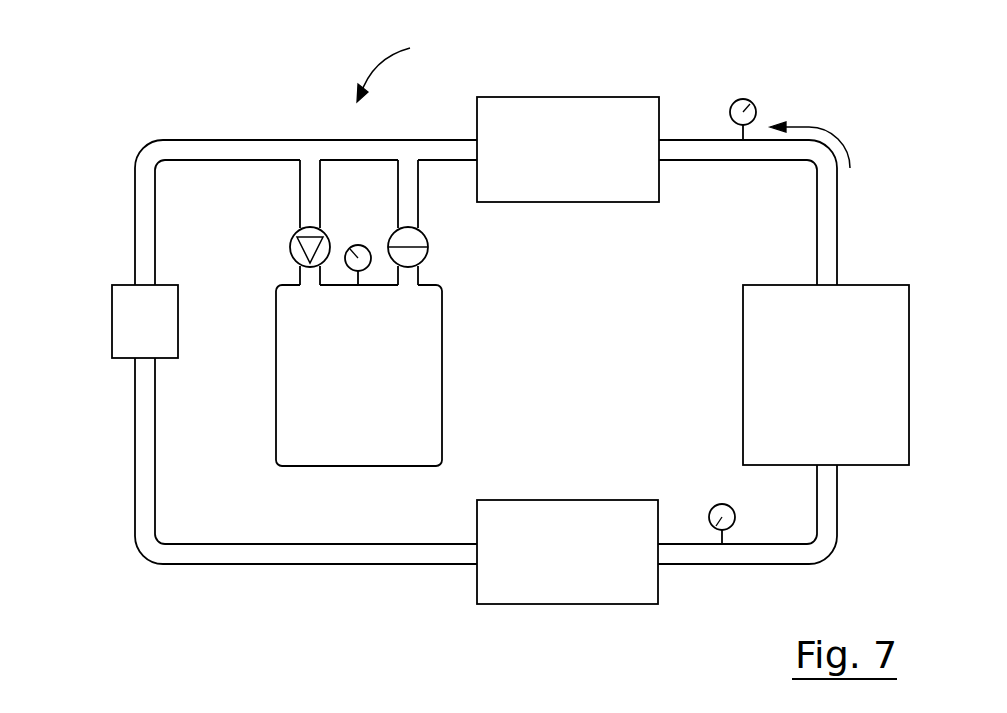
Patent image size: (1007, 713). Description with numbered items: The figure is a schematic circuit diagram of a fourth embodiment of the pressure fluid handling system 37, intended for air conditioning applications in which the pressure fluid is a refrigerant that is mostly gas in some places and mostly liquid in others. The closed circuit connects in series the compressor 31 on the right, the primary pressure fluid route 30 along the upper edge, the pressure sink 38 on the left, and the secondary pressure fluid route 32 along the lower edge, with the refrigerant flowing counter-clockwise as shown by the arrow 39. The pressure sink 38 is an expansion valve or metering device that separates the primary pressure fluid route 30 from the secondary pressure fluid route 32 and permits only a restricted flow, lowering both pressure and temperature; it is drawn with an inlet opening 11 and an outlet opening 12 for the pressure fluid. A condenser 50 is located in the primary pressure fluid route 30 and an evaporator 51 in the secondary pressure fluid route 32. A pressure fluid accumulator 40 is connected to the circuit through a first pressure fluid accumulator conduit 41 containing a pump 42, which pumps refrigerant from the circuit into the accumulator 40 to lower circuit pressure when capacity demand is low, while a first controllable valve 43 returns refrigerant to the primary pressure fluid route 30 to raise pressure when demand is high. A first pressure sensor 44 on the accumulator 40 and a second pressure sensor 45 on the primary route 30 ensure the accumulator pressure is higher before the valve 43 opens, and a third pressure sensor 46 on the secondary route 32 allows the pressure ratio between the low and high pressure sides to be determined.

The inlet opening 11 is at (148, 294).
The outlet opening 12 is at (148, 359).
The primary pressure fluid route 30 is at (223, 150).
The compressor 31 is at (755, 378).
The secondary pressure fluid route 32 is at (303, 552).
The pressure fluid handling system 37 is at (402, 63).
The pressure sink 38 is at (142, 313).
The arrow 39 is at (807, 128).
The pressure fluid accumulator 40 is at (427, 380).
The first pressure fluid accumulator conduit 41 is at (310, 190).
The pump 42 is at (293, 250).
The first controllable valve 43 is at (418, 238).
The first pressure sensor 44 is at (356, 245).
The second pressure sensor 45 is at (741, 99).
The third pressure sensor 46 is at (721, 504).
The condenser 50 is at (615, 192).
The evaporator 51 is at (598, 518).